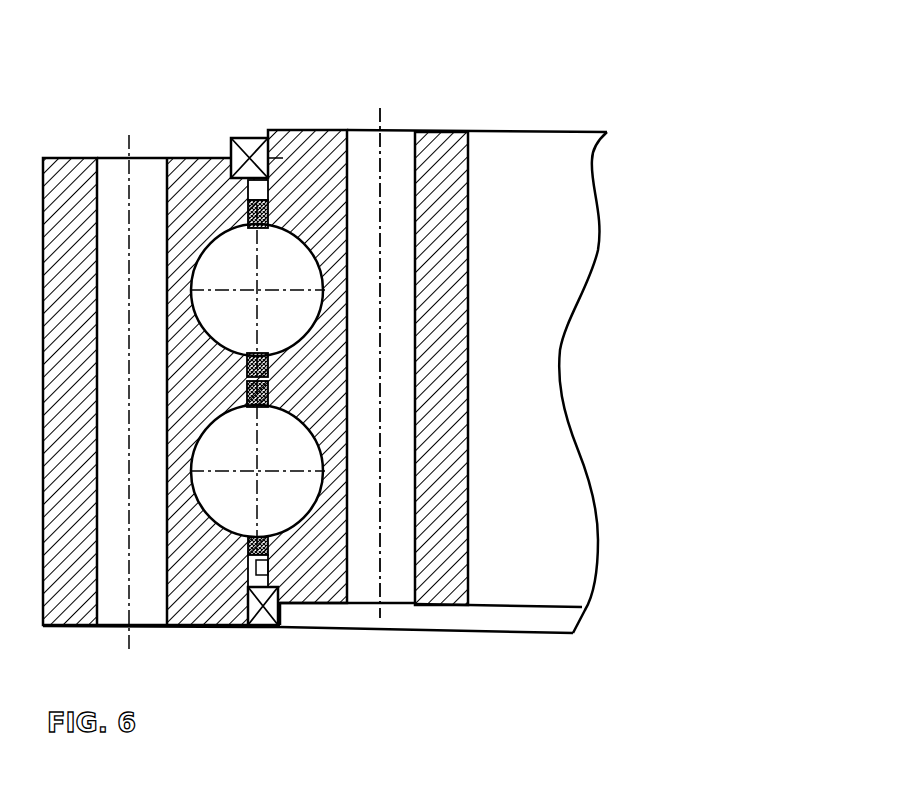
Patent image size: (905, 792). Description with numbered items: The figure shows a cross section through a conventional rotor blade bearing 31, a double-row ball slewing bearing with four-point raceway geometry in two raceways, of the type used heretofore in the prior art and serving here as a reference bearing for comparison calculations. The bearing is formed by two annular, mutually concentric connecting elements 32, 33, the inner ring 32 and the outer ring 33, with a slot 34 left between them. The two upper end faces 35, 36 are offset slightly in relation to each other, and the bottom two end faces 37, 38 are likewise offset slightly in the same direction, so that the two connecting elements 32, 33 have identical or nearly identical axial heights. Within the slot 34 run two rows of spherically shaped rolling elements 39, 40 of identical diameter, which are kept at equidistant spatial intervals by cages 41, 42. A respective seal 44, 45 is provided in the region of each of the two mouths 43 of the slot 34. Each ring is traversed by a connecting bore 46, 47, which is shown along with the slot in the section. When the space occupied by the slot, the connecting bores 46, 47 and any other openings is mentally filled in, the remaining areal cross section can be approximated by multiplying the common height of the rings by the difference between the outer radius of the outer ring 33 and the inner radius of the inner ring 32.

The rotor blade bearing 31 is at (380, 90).
The connecting element 32 is at (440, 145).
The connecting element 33 is at (78, 165).
The slot 34 is at (310, 606).
The upper end face 35 is at (318, 131).
The upper end face 36 is at (196, 162).
The bottom end face 37 is at (447, 614).
The bottom end face 38 is at (197, 628).
The rolling element 39 is at (302, 277).
The rolling element 40 is at (299, 450).
The cage 41 is at (267, 206).
The cage 42 is at (272, 537).
The mouth 43 is at (270, 137).
The seal 44 is at (248, 150).
The seal 45 is at (262, 627).
The connecting bore 46 is at (403, 592).
The connecting bore 47 is at (112, 180).